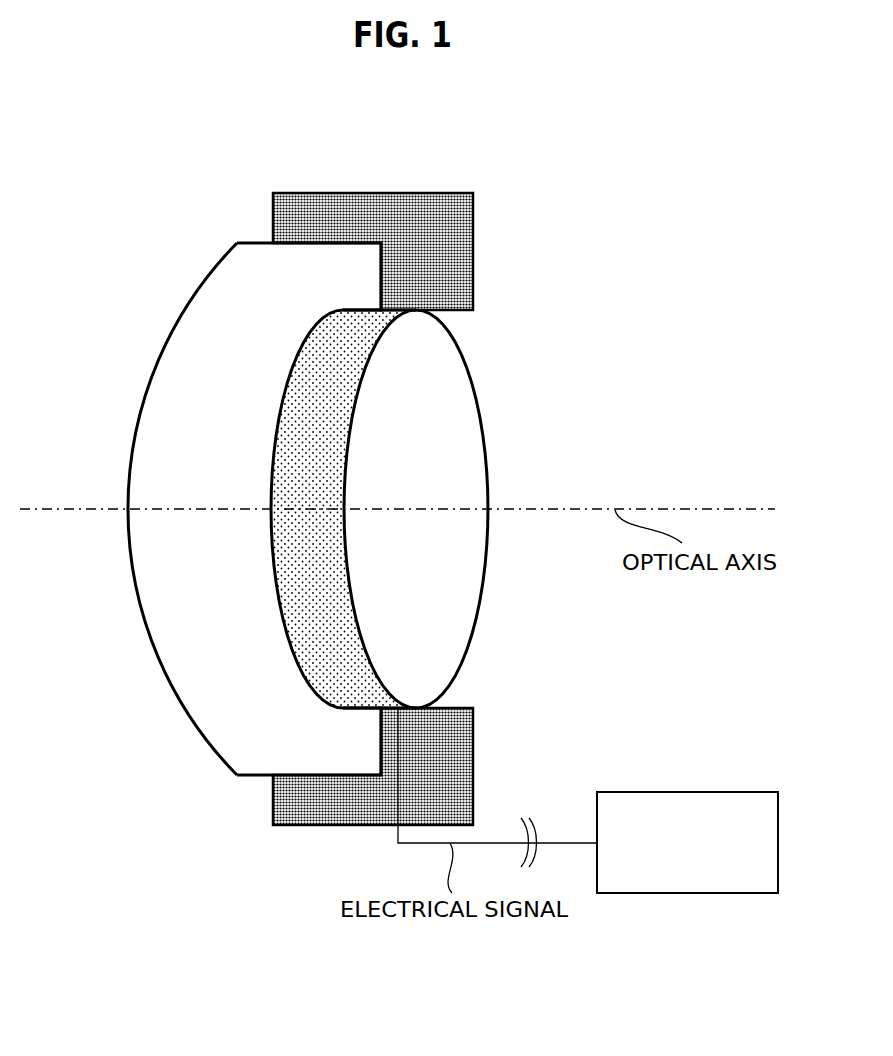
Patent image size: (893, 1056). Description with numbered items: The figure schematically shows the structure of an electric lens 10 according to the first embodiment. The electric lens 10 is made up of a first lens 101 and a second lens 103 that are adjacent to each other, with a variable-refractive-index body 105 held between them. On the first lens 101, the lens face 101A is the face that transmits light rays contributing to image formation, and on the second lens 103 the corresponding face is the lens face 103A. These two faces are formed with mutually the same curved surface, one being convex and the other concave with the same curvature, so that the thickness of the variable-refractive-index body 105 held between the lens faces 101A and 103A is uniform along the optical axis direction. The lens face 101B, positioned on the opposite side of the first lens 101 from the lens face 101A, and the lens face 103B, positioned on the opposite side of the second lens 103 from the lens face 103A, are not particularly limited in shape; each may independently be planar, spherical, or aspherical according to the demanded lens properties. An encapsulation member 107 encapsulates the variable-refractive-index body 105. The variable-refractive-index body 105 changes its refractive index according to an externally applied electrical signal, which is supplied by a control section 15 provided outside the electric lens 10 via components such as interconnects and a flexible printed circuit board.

The electric lens 10 is at (323, 174).
The first lens 101 is at (238, 277).
The lens face 101A is at (292, 648).
The lens face 101B is at (162, 670).
The second lens 103 is at (452, 393).
The lens face 103A is at (373, 660).
The lens face 103B is at (490, 460).
The variable-refractive-index body 105 is at (357, 353).
The encapsulation member 107 is at (453, 227).
The control section 15 is at (615, 792).